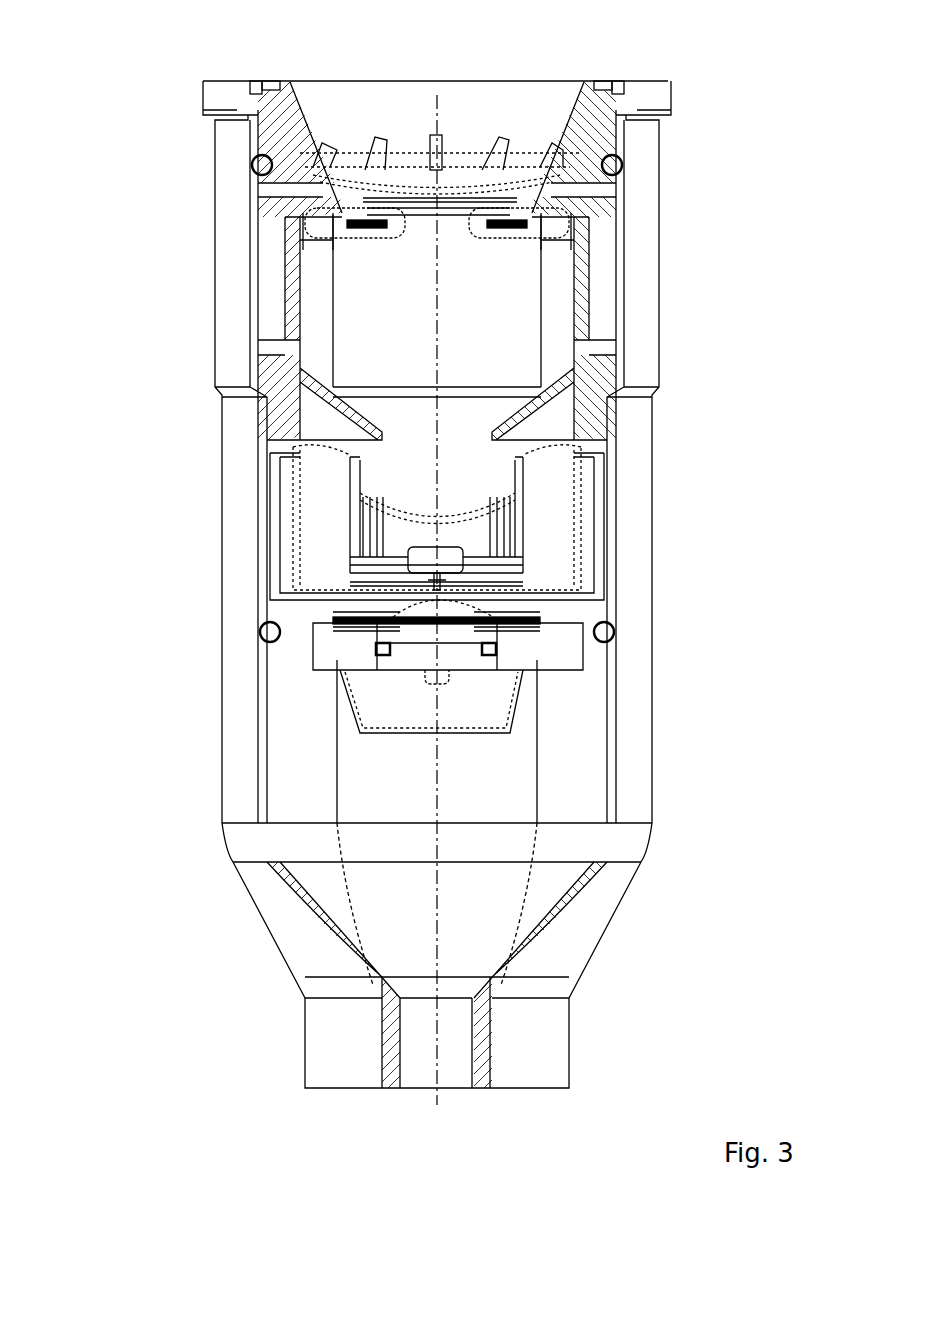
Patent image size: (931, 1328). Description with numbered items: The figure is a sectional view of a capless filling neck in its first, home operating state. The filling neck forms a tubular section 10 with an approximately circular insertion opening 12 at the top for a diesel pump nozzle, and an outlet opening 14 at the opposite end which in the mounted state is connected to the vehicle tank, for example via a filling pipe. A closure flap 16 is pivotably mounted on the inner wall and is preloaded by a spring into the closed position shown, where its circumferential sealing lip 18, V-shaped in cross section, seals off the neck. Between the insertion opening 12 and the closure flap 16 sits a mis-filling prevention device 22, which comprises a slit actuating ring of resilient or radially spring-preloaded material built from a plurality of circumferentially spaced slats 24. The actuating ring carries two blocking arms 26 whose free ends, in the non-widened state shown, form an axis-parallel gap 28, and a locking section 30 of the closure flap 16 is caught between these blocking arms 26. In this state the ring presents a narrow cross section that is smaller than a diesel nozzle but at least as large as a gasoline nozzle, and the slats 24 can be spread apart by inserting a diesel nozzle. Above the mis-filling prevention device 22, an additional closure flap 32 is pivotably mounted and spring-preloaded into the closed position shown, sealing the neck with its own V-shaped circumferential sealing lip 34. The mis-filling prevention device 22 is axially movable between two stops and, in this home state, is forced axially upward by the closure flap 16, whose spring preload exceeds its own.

The tubular section 10 is at (538, 310).
The insertion opening 12 is at (303, 98).
The outlet opening 14 is at (398, 1067).
The closure flap 16 is at (420, 637).
The circumferential sealing lip 18 is at (350, 625).
The mis-filling prevention device 22 is at (572, 475).
The slats 24 is at (320, 510).
The blocking arms 26 is at (367, 570).
The axis-parallel gap 28 is at (427, 582).
The locking section 30 is at (455, 553).
The additional closure flap 32 is at (412, 185).
The circumferential sealing lip 34 is at (553, 222).